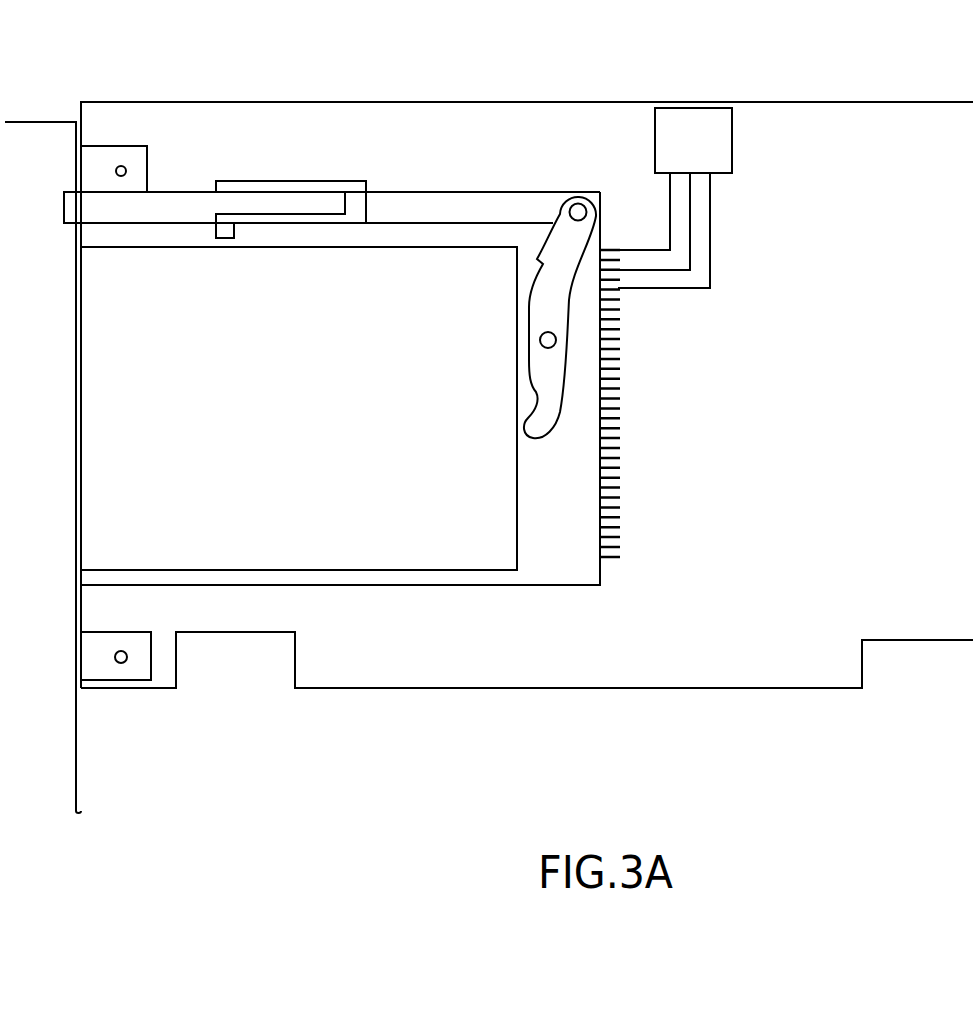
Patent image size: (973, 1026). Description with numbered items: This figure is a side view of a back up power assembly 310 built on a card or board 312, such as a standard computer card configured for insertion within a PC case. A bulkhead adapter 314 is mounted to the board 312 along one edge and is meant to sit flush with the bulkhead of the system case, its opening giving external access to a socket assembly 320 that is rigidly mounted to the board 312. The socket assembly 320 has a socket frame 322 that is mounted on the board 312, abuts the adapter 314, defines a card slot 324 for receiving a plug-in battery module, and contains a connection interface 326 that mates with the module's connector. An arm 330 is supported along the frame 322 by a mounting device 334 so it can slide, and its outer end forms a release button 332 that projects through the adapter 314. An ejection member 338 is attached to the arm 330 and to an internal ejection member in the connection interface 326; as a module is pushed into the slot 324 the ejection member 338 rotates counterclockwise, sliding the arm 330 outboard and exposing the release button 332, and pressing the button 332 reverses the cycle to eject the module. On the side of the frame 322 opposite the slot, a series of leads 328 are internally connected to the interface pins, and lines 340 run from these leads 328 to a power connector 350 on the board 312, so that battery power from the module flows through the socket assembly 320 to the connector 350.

The back up power assembly 310 is at (102, 70).
The card or board 312 is at (227, 102).
The bulkhead adapter 314 is at (25, 121).
The socket assembly 320 is at (486, 180).
The socket frame 322 is at (398, 586).
The card slot 324 is at (458, 538).
The connection interface 326 is at (571, 568).
The leads 328 is at (620, 538).
The arm 330 is at (162, 192).
The release button 332 is at (63, 212).
The mounting device 334 is at (293, 181).
The ejection member 338 is at (560, 216).
The lines 340 is at (642, 252).
The power connector 350 is at (732, 140).